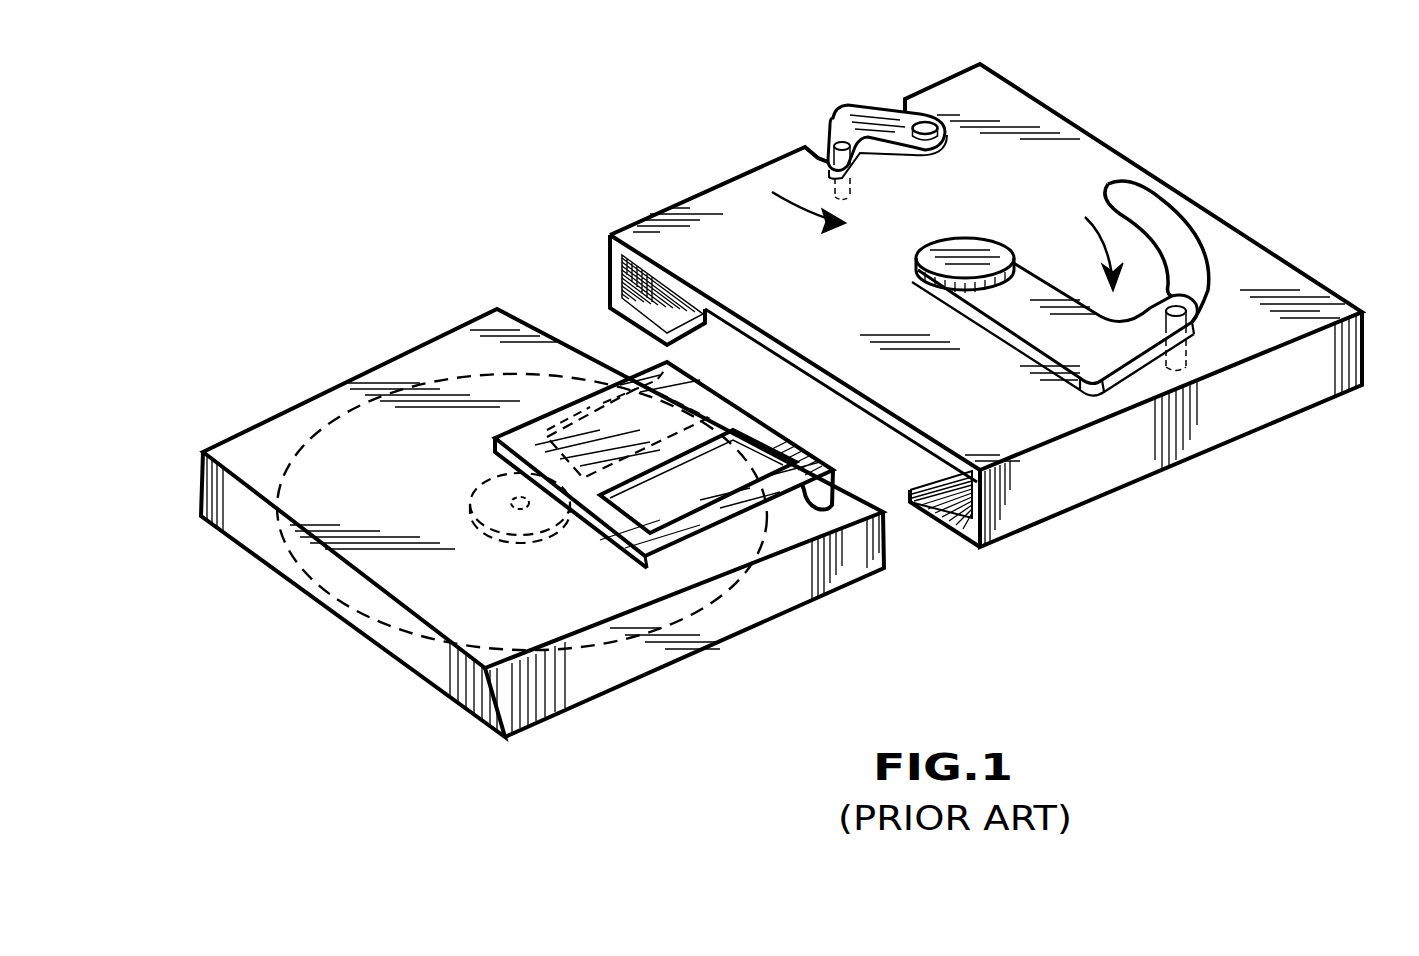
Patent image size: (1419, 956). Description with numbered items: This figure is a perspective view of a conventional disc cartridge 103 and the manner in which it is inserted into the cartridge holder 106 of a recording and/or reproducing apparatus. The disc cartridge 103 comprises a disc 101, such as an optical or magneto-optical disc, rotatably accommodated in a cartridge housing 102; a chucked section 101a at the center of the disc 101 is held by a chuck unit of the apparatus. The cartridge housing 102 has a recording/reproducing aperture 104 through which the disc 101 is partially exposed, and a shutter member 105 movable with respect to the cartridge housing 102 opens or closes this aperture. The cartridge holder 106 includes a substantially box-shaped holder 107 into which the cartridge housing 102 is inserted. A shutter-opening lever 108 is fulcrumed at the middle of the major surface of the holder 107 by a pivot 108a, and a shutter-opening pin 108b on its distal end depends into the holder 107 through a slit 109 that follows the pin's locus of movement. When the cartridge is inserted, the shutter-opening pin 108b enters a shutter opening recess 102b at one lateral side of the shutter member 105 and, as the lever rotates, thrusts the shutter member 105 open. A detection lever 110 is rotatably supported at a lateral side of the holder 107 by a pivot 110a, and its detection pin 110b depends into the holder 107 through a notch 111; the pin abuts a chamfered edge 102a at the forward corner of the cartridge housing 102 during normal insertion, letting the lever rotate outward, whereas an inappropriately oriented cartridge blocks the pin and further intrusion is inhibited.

The disc 101 is at (380, 563).
The chucked section 101a is at (500, 518).
The cartridge housing 102 is at (233, 520).
The chamfered edge 102a is at (586, 425).
The shutter opening recess 102b is at (850, 500).
The disc cartridge 103 is at (356, 368).
The recording/reproducing aperture 104 is at (600, 372).
The shutter member 105 is at (697, 523).
The cartridge holder 106 is at (685, 163).
The holder 107 is at (1037, 488).
The shutter-opening lever 108 is at (1037, 298).
The pivot 108a is at (963, 250).
The shutter-opening pin 108b is at (1185, 322).
The slit 109 is at (1182, 262).
The detection lever 110 is at (866, 108).
The pivot 110a is at (927, 124).
The detection pin 110b is at (834, 124).
The notch 111 is at (805, 146).